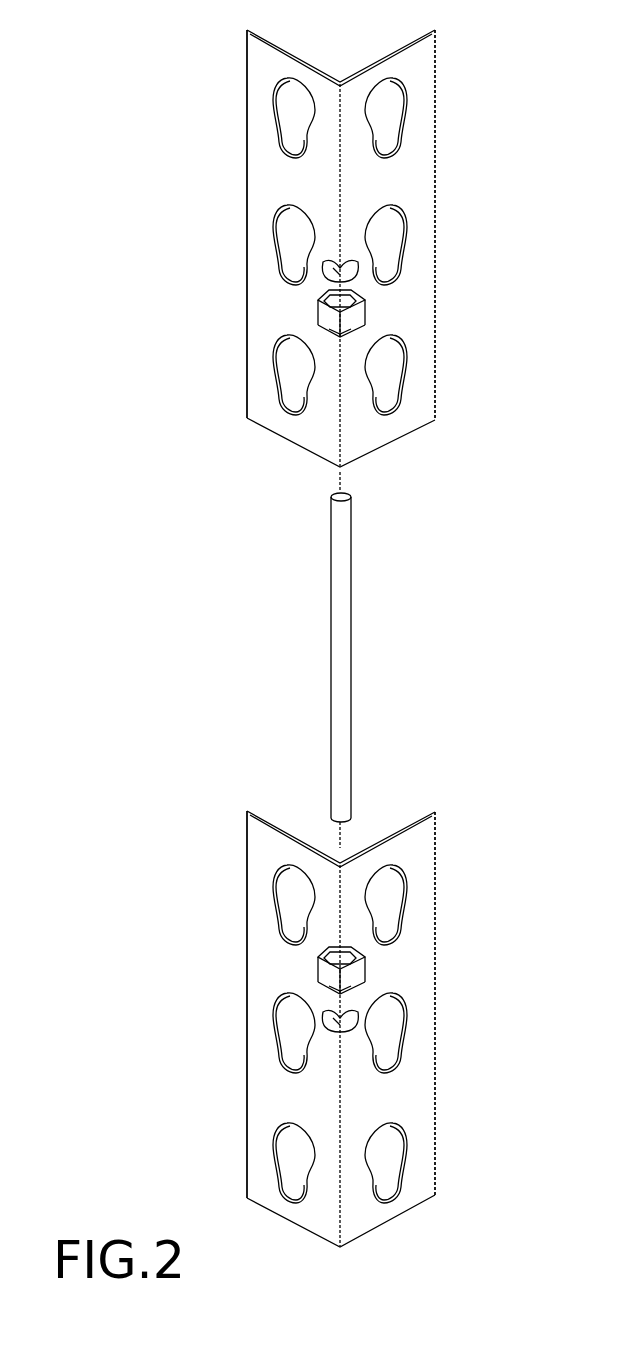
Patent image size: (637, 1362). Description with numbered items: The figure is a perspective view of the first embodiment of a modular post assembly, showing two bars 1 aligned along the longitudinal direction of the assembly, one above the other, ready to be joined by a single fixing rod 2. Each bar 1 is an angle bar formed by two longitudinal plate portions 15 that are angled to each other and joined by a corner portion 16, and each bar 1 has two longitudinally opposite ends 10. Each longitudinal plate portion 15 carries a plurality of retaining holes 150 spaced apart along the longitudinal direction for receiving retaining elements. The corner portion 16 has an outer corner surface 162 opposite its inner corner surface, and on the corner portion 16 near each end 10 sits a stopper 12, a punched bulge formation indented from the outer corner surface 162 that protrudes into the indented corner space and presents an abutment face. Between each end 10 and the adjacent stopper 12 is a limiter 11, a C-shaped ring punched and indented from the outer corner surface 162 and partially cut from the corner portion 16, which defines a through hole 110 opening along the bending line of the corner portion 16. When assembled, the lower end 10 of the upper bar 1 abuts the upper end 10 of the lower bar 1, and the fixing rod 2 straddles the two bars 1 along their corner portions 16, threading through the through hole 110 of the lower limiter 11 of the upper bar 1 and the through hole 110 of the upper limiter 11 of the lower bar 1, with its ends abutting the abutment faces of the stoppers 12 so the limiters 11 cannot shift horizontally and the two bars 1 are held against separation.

The bar 1 is at (185, 243).
The fixing rod 2 is at (340, 637).
The end 10 is at (415, 430).
The limiter 11 is at (355, 312).
The through hole 110 is at (342, 995).
The stopper 12 is at (345, 265).
The longitudinal plate portion 15 is at (402, 165).
The retaining hole 150 is at (292, 228).
The corner portion 16 is at (350, 470).
The outer corner surface 162 is at (342, 108).